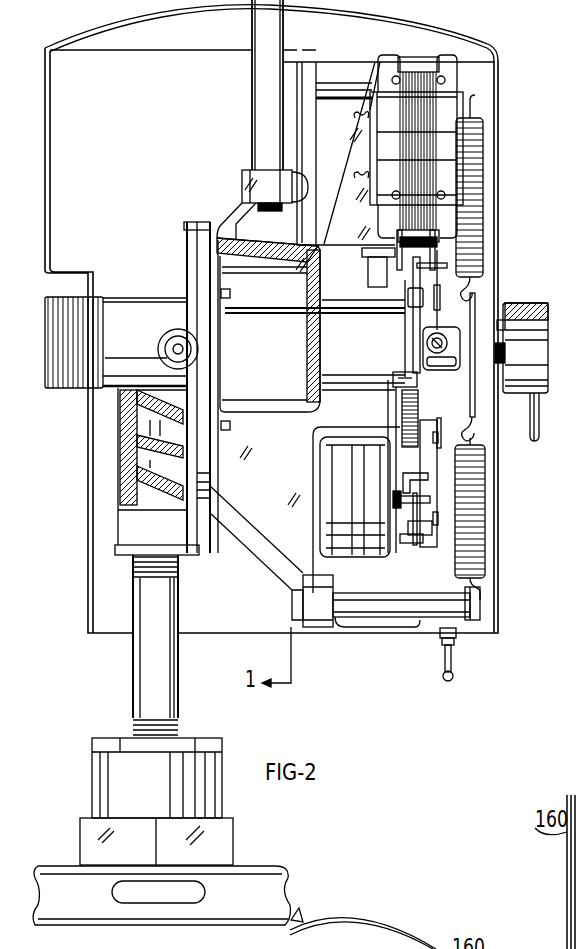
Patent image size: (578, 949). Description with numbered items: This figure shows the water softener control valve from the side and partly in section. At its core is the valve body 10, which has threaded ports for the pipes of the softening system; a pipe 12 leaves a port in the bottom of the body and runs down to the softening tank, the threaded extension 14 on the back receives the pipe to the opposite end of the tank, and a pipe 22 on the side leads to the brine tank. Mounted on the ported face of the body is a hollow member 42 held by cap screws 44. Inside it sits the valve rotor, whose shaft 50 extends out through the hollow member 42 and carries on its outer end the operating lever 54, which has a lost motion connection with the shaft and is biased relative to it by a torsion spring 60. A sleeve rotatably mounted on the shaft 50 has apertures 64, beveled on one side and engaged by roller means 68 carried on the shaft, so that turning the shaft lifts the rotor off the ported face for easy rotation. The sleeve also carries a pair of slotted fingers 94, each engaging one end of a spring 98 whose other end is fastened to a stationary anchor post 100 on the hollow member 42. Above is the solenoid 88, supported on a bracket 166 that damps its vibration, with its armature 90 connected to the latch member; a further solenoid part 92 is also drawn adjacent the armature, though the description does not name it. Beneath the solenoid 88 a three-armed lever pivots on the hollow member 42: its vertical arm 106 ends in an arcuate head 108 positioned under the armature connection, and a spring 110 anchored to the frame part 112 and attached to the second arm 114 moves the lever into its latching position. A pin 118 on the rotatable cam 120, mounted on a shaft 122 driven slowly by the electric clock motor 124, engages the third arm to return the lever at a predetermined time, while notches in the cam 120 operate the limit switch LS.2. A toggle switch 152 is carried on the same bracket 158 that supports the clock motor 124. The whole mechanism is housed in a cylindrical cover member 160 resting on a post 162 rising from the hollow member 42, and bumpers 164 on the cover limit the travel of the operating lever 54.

The valve body 10 is at (167, 532).
The pipe 12 is at (163, 606).
The threaded extension 14 is at (97, 296).
The pipe 22 is at (158, 340).
The hollow member 42 is at (296, 544).
The cap screws 44 is at (227, 297).
The shaft 50 is at (498, 364).
The operating lever 54 is at (536, 422).
The torsion spring 60 is at (497, 346).
The apertures 64 is at (457, 348).
The roller means 68 is at (442, 352).
The solenoid 88 is at (450, 123).
The armature 90 is at (400, 242).
The solenoid plunger 92 is at (430, 258).
The slotted fingers 94 is at (472, 312).
The springs 98 is at (482, 220).
The anchor post 100 is at (336, 92).
The arm 106 is at (403, 346).
The arcuate head 108 is at (437, 292).
The spring 110 is at (423, 432).
The frame part 112 is at (397, 373).
The second arm 114 is at (420, 476).
The pin 118 is at (405, 543).
The cam 120 is at (420, 528).
The shaft 122 is at (423, 500).
The electric clock motor 124 is at (348, 543).
The switch 152 is at (545, 602).
The bracket 158 is at (417, 632).
The cover member 160 is at (495, 76).
The post 162 is at (267, 91).
The bumpers 164 is at (528, 306).
The bracket 166 is at (352, 165).
The limit switch LS.2 is at (423, 460).